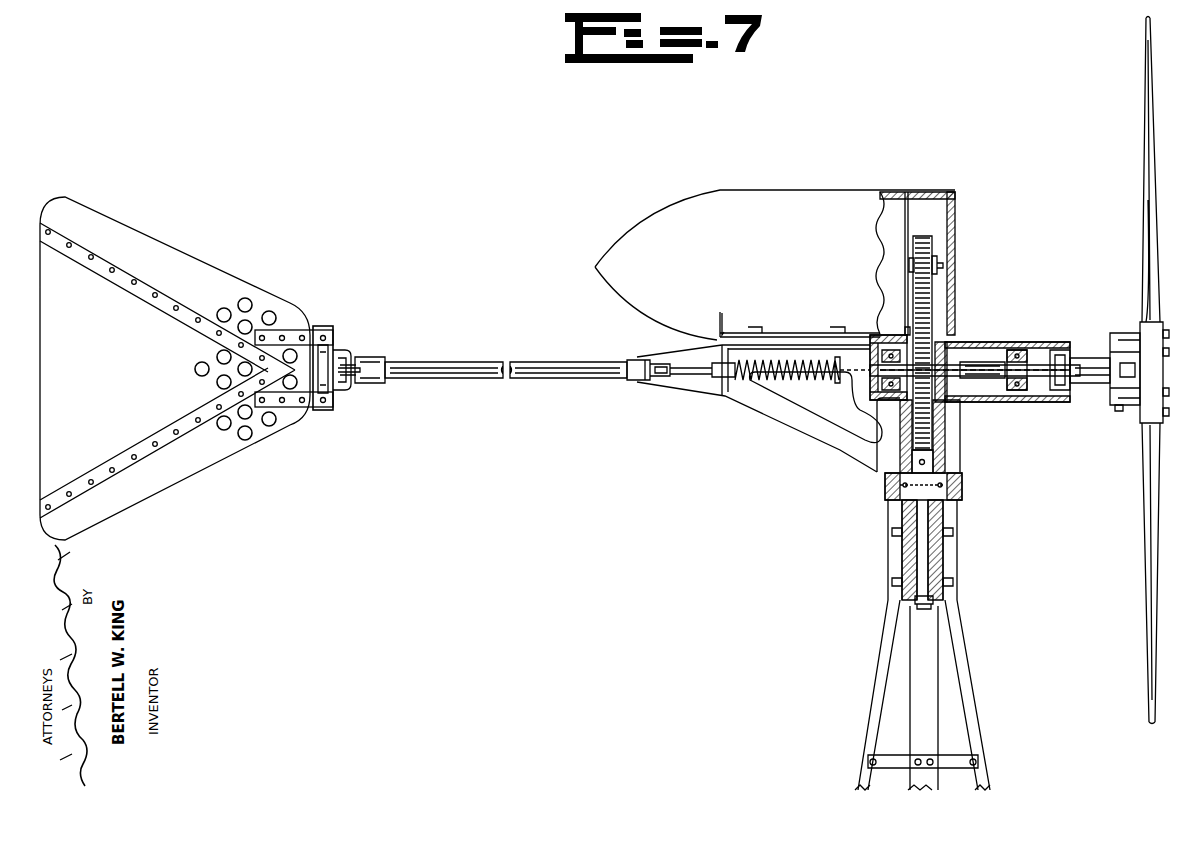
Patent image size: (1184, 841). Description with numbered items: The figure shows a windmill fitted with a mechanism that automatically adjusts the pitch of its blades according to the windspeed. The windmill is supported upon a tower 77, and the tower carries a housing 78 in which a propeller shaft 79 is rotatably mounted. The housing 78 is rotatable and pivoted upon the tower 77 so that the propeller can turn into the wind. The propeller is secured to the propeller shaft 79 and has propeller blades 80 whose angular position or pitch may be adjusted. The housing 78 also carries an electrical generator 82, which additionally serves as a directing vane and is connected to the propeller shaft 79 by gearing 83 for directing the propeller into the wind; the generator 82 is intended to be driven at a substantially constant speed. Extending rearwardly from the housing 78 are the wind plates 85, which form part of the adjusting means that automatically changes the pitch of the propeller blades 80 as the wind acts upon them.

The tower 77 is at (965, 637).
The housing 78 is at (980, 343).
The propeller shaft 79 is at (992, 360).
The propeller blades 80 is at (1145, 224).
The electrical generator 82 is at (780, 198).
The gearing 83 is at (922, 287).
The wind plates 85 is at (205, 470).